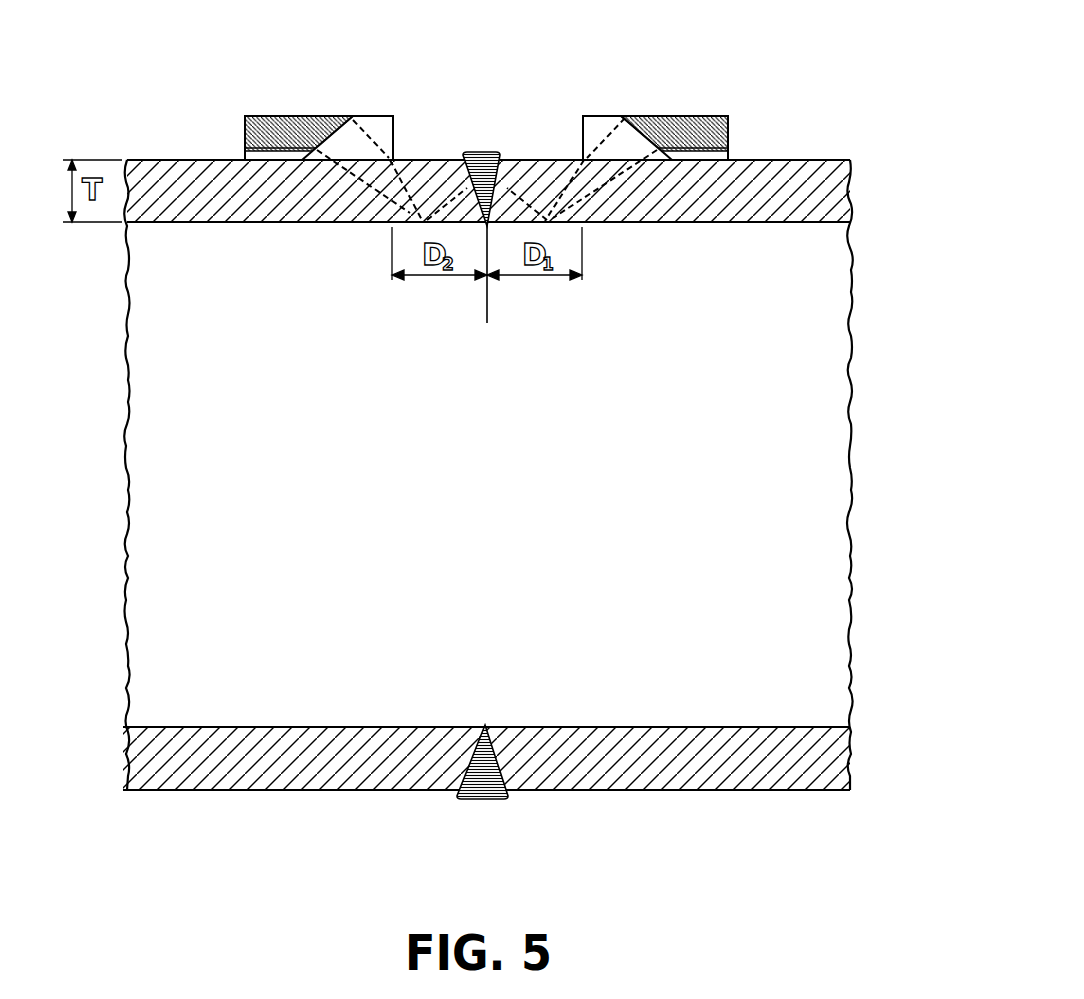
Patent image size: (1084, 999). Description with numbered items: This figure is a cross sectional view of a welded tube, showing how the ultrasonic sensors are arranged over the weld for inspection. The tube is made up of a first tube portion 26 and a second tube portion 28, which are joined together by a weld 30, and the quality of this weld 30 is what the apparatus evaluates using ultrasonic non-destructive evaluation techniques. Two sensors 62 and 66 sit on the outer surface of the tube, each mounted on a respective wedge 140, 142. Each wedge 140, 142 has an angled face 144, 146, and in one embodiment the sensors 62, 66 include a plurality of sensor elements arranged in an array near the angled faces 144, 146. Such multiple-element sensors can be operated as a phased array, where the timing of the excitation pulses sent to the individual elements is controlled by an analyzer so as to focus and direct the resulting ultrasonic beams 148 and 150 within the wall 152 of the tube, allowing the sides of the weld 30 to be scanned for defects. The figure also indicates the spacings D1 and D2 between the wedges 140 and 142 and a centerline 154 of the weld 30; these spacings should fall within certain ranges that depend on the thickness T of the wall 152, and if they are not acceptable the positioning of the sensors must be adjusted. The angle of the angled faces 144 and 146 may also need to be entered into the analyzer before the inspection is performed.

The first tube portion 26 is at (785, 160).
The second tube portion 28 is at (183, 160).
The weld 30 is at (487, 151).
The sensor 62 is at (663, 116).
The sensor 66 is at (310, 116).
The wedge 140 is at (597, 116).
The wedge 142 is at (378, 116).
The angled face 144 is at (631, 134).
The angled face 146 is at (342, 134).
The ultrasonic beam 148 is at (562, 183).
The ultrasonic beam 150 is at (420, 175).
The wall 152 is at (820, 197).
The centerline 154 is at (487, 297).